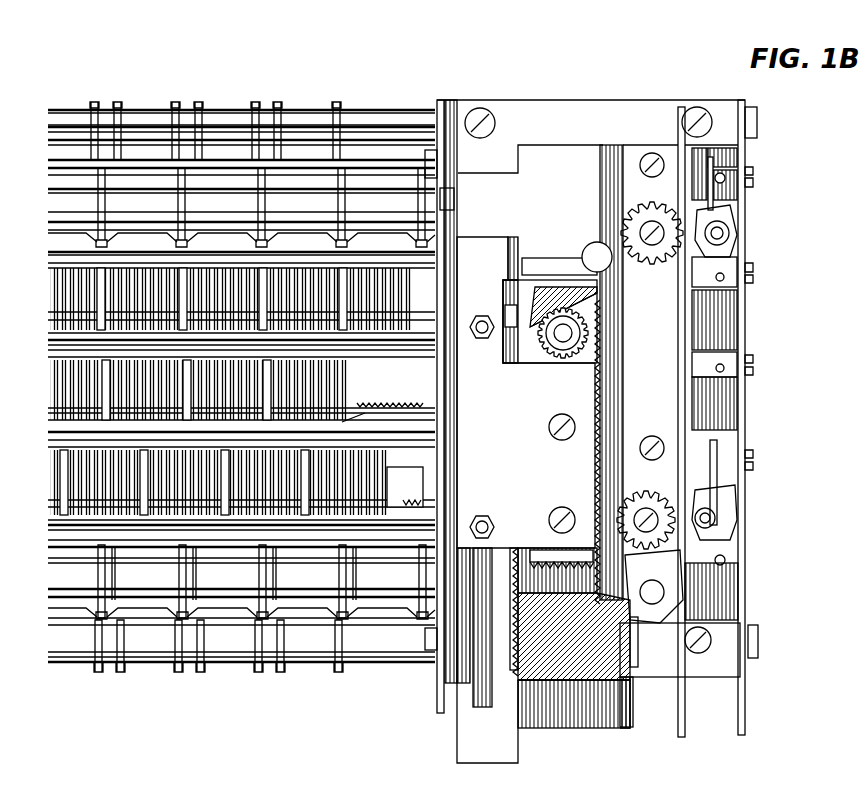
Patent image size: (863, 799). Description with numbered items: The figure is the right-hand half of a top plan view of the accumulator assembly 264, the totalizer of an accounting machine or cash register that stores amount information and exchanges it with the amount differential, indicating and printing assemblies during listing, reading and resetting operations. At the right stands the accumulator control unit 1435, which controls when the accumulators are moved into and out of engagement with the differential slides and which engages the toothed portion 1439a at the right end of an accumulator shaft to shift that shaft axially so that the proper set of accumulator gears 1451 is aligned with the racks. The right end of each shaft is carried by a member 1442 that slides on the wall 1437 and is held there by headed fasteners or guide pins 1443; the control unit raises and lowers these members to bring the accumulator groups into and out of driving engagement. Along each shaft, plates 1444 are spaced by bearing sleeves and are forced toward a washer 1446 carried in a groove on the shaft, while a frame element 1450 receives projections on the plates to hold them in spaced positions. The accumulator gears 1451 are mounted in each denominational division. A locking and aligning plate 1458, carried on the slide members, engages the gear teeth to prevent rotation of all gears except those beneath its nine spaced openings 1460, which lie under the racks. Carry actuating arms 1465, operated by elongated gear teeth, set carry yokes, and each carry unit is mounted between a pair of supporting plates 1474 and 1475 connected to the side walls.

The accumulator assembly 264 is at (188, 716).
The accumulator control unit 1435 is at (766, 210).
The wall 1437 is at (436, 676).
The toothed portion 1439a is at (420, 400).
The member 1442 is at (446, 200).
The headed fasteners or guide pins 1443 is at (433, 163).
The plates 1444 is at (350, 151).
The washer 1446 is at (417, 577).
The frame element 1450 is at (147, 160).
The accumulator gears 1451 is at (104, 188).
The locking and aligning plate 1458 is at (135, 612).
The spaced openings 1460 is at (90, 607).
The carry actuating arms 1465 is at (230, 160).
The supporting plate 1474 is at (258, 663).
The supporting plate 1475 is at (283, 665).